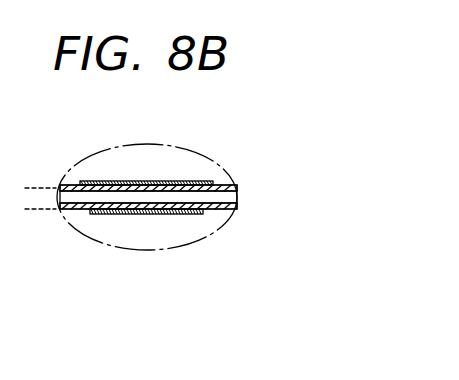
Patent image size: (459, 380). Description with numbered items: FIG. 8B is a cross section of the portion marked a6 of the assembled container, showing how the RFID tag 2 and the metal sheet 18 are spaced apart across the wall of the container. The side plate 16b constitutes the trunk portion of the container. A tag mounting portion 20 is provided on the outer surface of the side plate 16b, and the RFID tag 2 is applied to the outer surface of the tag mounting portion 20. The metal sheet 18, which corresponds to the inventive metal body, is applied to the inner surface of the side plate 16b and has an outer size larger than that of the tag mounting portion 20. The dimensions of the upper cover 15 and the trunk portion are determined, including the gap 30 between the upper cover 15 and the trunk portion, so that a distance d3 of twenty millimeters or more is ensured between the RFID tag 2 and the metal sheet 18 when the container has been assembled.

The gap 30 is at (71, 189).
The metal sheet 18 is at (145, 185).
The side plate 16b is at (219, 196).
The tag mounting portion 20 is at (72, 210).
The RFID tag 2 is at (139, 214).
The upper cover 15 is at (222, 212).
The portion a6 is at (186, 246).
The distance d3 is at (36, 231).